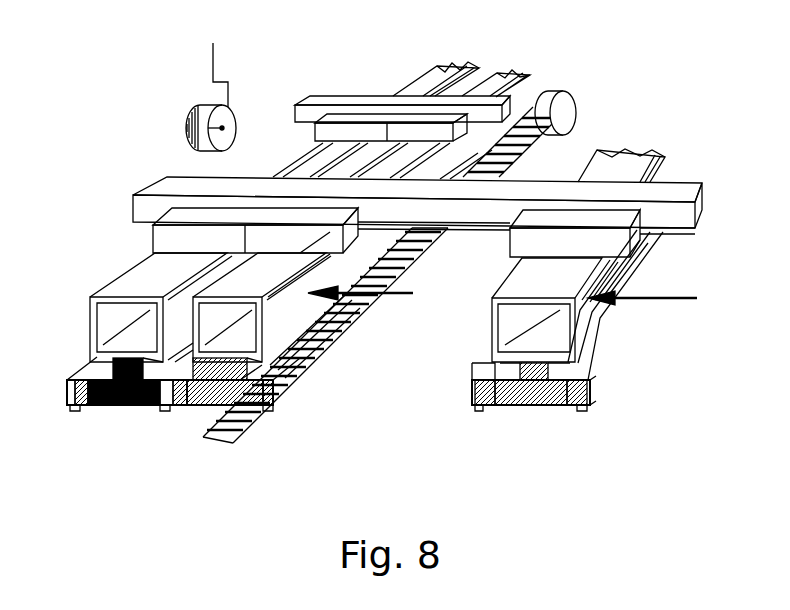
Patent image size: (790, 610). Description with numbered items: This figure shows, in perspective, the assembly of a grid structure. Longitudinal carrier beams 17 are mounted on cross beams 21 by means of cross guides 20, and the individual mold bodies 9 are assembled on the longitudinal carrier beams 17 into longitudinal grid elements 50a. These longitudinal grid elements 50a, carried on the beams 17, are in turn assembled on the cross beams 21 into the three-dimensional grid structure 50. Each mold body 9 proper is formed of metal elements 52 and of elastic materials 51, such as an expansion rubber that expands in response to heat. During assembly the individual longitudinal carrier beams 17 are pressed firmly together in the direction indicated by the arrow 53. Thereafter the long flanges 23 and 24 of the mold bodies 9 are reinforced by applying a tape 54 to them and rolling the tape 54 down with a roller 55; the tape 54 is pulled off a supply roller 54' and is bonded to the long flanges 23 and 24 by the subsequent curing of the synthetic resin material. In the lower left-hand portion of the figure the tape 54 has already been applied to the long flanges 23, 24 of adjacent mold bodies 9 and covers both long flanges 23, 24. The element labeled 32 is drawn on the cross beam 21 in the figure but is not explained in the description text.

The mold body 9 is at (210, 428).
The longitudinal carrier beam 17 is at (135, 280).
The cross guide 20 is at (163, 240).
The cross beam 21 is at (335, 102).
The long flange 23 is at (483, 370).
The long flange 24 is at (263, 408).
The guide bar 32 is at (453, 224).
The three-dimensional grid structure 50 is at (538, 64).
The longitudinal grid element 50a is at (595, 393).
The elastic material 51 is at (535, 408).
The metal element 52 is at (572, 408).
The arrow 53 is at (390, 300).
The tape 54 is at (170, 406).
The supply roller 54' is at (572, 99).
The roller 55 is at (194, 118).